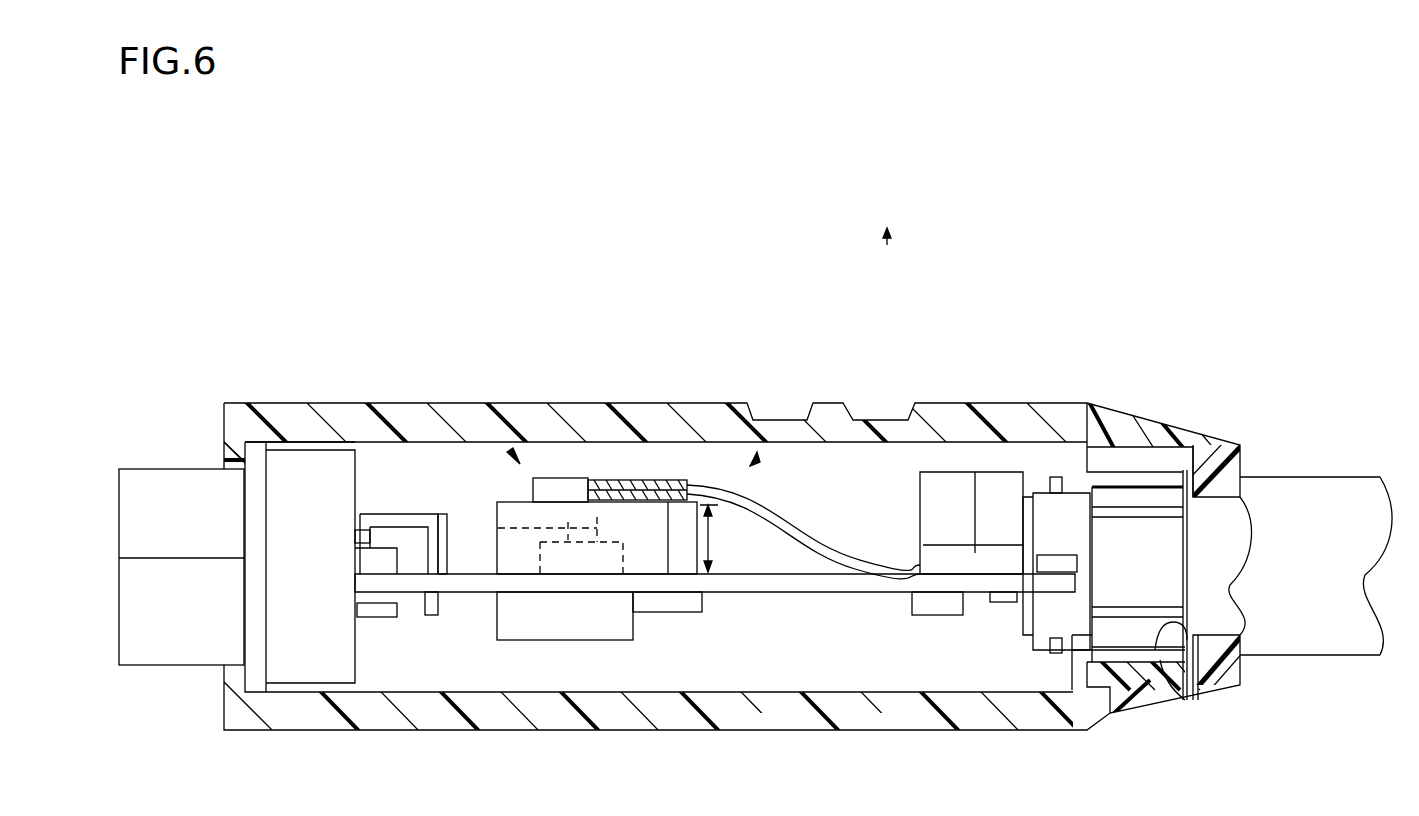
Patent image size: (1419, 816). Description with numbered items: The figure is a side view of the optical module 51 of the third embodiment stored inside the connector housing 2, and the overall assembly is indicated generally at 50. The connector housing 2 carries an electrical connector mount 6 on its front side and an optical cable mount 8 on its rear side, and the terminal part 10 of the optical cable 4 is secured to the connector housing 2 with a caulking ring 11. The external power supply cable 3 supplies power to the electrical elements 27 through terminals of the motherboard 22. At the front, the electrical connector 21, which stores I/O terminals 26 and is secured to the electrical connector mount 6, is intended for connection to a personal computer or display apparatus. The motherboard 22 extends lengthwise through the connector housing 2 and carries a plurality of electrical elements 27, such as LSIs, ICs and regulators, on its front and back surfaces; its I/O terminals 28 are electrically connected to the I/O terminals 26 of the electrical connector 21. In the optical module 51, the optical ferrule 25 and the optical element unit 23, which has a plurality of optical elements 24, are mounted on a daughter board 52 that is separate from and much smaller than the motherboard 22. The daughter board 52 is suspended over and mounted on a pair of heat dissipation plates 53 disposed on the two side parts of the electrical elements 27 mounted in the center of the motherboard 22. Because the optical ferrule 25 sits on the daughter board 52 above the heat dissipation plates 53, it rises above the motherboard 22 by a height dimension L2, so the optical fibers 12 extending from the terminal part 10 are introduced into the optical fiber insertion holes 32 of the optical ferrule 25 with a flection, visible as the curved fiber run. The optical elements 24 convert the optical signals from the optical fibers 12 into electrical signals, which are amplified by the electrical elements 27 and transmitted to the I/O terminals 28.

The connector housing 2 is at (300, 403).
The external power supply cable 3 is at (1323, 477).
The optical cable 4 is at (1233, 645).
The electrical connector mount 6 is at (236, 460).
The optical cable mount 8 is at (1185, 700).
The terminal part 10 is at (976, 472).
The caulking ring 11 is at (1073, 690).
The optical fibers 12 is at (845, 543).
The electrical connector 21 is at (152, 470).
The motherboard 22 is at (803, 592).
The optical element unit 23 is at (510, 502).
The optical elements 24 is at (547, 490).
The optical ferrule 25 is at (603, 480).
The I/O terminals 26 is at (358, 540).
The electrical elements 27 is at (442, 513).
The I/O terminals 28 is at (393, 513).
The optical fiber insertion holes 32 is at (623, 483).
The sensor device 50 is at (887, 232).
The optical module 51 is at (757, 455).
The daughter board 52 is at (512, 452).
The heat dissipation plates 53 is at (690, 540).
The height dimension L2 is at (710, 540).